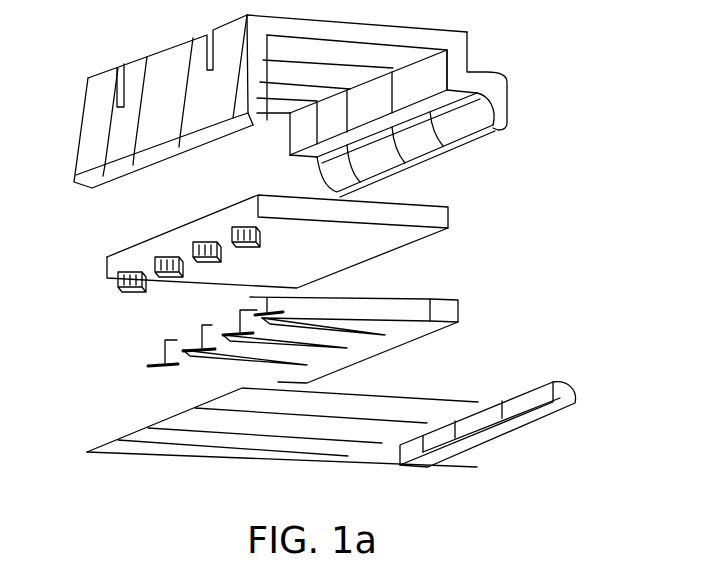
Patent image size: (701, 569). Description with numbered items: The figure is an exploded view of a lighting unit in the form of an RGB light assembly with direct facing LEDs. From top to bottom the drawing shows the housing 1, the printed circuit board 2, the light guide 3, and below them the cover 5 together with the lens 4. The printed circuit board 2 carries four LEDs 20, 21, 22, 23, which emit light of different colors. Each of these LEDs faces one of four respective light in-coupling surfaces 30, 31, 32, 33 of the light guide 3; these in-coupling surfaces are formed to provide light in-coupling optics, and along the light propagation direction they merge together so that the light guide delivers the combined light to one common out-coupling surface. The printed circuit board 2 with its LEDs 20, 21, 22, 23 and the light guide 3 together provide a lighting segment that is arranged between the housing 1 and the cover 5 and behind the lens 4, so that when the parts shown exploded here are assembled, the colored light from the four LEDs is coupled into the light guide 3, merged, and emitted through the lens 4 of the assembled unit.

The housing 1 is at (97, 130).
The printed circuit board 2 is at (440, 217).
The light guide 3 is at (405, 307).
The lens 4 is at (532, 413).
The cover 5 is at (357, 437).
The LED 20 is at (133, 273).
The LED 21 is at (170, 258).
The LED 22 is at (205, 242).
The LED 23 is at (247, 225).
The light in-coupling surface 30 is at (155, 357).
The light in-coupling surface 31 is at (191, 344).
The light in-coupling surface 32 is at (228, 326).
The light in-coupling surface 33 is at (268, 308).